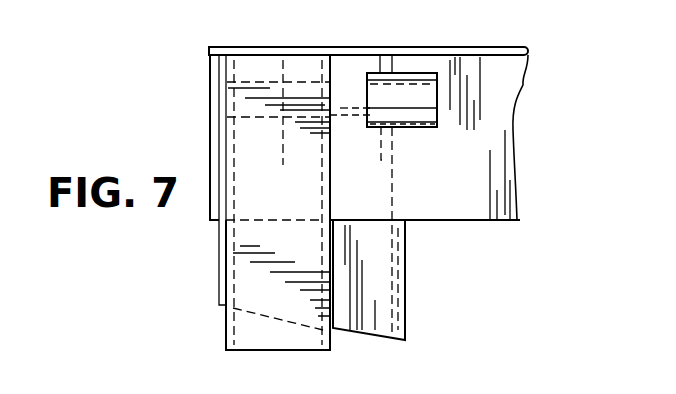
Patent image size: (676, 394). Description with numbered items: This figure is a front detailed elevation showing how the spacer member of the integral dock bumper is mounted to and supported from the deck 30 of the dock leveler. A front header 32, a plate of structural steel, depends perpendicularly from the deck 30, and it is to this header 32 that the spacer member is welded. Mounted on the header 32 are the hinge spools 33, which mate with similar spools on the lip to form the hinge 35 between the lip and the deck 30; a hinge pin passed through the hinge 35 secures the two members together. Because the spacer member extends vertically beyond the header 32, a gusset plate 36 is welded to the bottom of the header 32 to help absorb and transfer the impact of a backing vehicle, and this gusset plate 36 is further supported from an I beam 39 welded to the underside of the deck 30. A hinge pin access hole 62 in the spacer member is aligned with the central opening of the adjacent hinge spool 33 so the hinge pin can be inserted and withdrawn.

The deck 30 is at (421, 48).
The front header 32 is at (420, 208).
The hinge spool 33 is at (432, 95).
The hinge 35 is at (392, 285).
The gusset plate 36 is at (378, 312).
The I beam 39 is at (342, 108).
The hinge pin access hole 62 is at (268, 122).